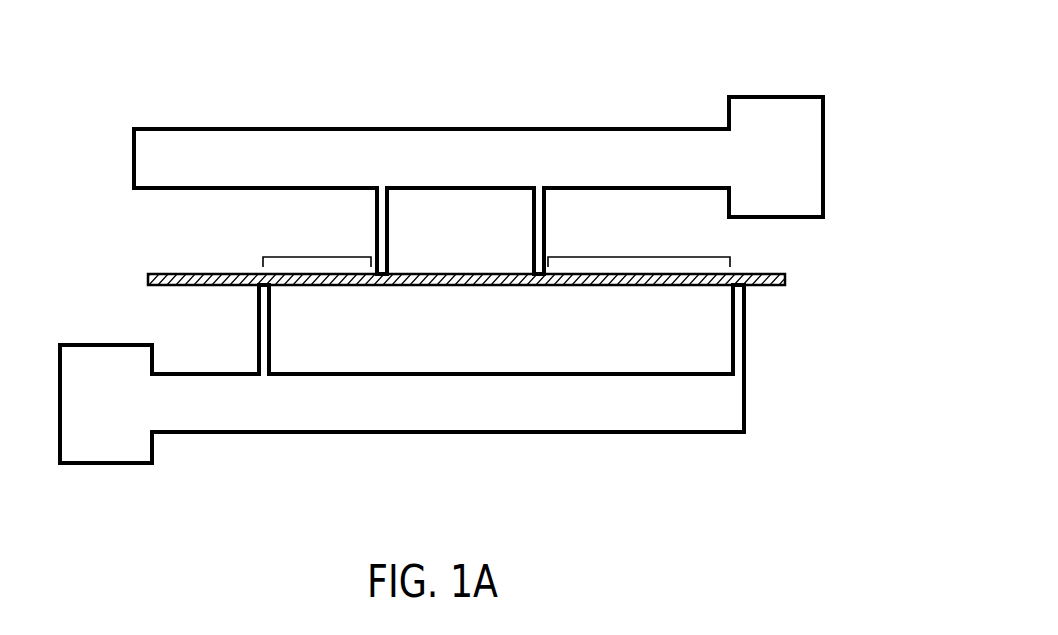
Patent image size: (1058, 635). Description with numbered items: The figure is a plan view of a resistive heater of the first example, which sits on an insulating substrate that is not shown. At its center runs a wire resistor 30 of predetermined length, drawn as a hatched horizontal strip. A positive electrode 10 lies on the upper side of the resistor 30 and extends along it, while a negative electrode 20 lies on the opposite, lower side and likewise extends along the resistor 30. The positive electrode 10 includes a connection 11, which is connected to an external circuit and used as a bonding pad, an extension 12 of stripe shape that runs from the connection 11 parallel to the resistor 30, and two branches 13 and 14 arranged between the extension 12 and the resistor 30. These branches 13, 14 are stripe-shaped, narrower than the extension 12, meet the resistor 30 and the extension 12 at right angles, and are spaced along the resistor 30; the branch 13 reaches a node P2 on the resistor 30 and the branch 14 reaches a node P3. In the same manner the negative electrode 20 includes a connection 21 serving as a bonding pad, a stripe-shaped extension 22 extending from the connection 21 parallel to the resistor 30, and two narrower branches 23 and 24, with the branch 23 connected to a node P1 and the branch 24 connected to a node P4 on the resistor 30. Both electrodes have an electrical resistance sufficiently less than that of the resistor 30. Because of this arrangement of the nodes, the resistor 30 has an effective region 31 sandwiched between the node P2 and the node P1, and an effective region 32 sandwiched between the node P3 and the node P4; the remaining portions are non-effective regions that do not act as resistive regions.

The positive electrode 10 is at (549, 106).
The connection 11 is at (757, 113).
The extension 12 is at (304, 147).
The branch 13 is at (382, 233).
The branch 14 is at (538, 233).
The negative electrode 20 is at (565, 483).
The connection 21 is at (110, 457).
The extension 22 is at (404, 420).
The branch 23 is at (258, 330).
The branch 24 is at (732, 330).
The wire resistor 30 is at (228, 276).
The effective region 31 is at (317, 247).
The effective region 32 is at (639, 245).
The node P1 is at (268, 286).
The node P2 is at (381, 287).
The node P3 is at (539, 288).
The node P4 is at (742, 273).